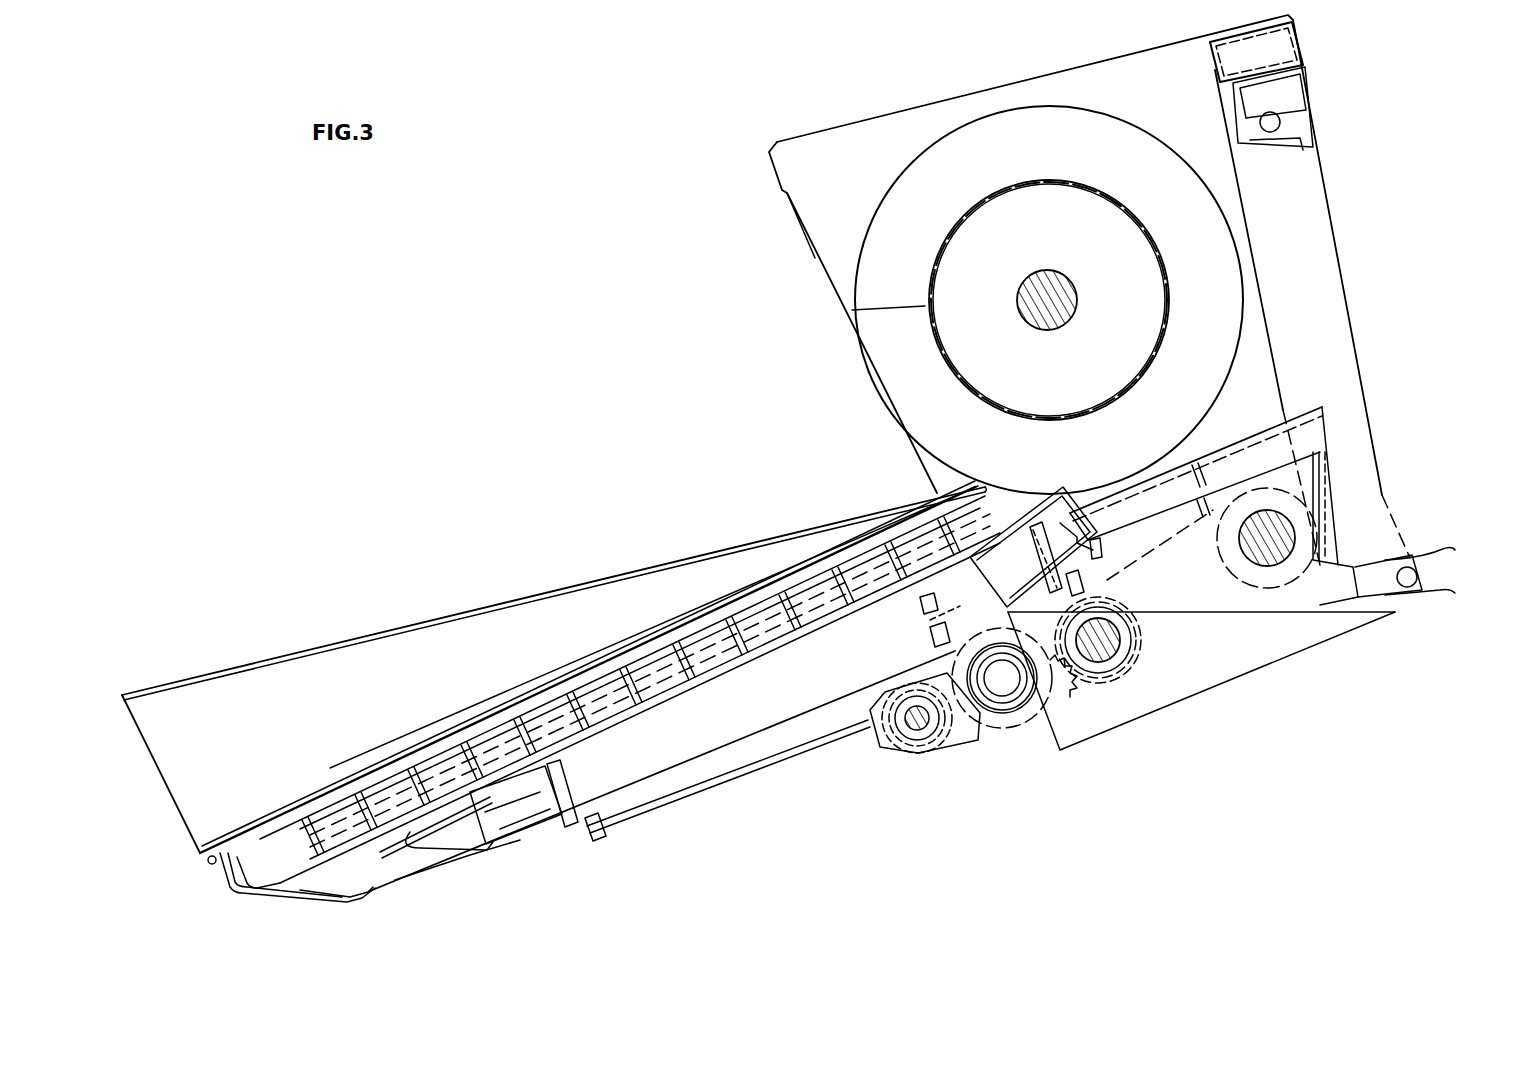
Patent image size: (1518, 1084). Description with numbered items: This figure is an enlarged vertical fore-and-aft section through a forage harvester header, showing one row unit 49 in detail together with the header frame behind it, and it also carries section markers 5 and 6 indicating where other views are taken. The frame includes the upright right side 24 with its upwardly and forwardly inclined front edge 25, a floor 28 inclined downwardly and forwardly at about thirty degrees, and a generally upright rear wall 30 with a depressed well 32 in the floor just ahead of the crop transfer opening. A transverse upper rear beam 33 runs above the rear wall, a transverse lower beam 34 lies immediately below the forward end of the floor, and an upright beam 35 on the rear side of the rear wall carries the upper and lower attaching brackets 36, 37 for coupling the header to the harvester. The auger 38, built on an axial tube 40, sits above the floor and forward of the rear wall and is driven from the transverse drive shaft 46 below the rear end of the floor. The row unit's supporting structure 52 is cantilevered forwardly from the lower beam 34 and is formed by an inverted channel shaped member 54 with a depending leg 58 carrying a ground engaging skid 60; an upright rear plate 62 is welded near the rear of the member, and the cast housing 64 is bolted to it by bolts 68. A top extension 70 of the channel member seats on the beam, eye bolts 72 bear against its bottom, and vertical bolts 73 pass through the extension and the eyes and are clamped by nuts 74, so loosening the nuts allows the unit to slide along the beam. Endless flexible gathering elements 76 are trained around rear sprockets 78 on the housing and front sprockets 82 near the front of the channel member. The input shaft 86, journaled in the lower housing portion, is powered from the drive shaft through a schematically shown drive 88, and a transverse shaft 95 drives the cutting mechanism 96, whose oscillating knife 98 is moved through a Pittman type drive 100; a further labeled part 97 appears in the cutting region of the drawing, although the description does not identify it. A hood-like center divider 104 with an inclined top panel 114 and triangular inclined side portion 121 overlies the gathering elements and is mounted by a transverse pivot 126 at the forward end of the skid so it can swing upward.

The upright right side 24 is at (850, 140).
The front edge 25 is at (812, 258).
The floor 28 is at (1200, 453).
The rear wall 30 is at (1252, 265).
The well 32 is at (1150, 508).
The upper rear beam 33 is at (1304, 58).
The lower beam 34 is at (1096, 550).
The upright beam 35 is at (1340, 280).
The upper attaching bracket 36 is at (1290, 137).
The lower attaching bracket 37 is at (1450, 553).
The auger 38 is at (1230, 385).
The axial tube 40 is at (1152, 356).
The drive shaft 46 is at (1252, 562).
The row unit 49 is at (632, 830).
The supporting structure 52 is at (752, 740).
The channel shaped member 54 is at (777, 700).
The leg 58 is at (812, 698).
The skid 60 is at (243, 872).
The rear plate 62 is at (935, 645).
The cast housing 64 is at (920, 604).
The bolts 68 is at (923, 627).
The top extension 70 is at (1050, 545).
The eye bolts 72 is at (1035, 595).
The vertical bolts 73 is at (1050, 540).
The nuts 74 is at (1100, 598).
The gathering elements 76 is at (463, 740).
The rear sprockets 78 is at (905, 545).
The front sprockets 82 is at (345, 815).
The input shaft 86 is at (1078, 680).
The drive 88 is at (1180, 640).
The transverse shaft 95 is at (920, 735).
The cutting mechanism 96 is at (484, 862).
The hook 97 is at (400, 858).
The oscillating knife 98 is at (470, 856).
The Pittman type drive 100 is at (690, 812).
The center divider 104 is at (358, 626).
The top panel 114 is at (540, 590).
The inclined portion 121 is at (524, 640).
The transverse pivot 126 is at (212, 864).
The section line 5- 5 is at (270, 710).
The section line 6- 6 is at (812, 677).